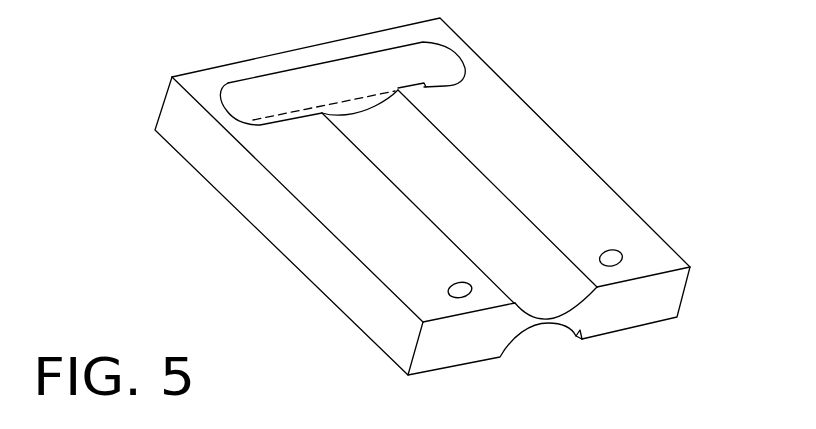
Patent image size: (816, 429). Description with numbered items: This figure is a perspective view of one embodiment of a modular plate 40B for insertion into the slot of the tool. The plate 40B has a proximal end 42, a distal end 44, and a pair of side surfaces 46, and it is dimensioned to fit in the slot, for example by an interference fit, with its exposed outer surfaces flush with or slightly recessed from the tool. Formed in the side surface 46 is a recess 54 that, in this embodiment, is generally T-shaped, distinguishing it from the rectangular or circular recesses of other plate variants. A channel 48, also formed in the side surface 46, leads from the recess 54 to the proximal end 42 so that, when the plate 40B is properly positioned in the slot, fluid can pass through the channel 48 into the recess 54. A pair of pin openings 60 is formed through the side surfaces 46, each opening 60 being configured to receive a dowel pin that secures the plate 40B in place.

The plate 40B is at (578, 38).
The distal end 44 is at (250, 58).
The recess 54 is at (363, 91).
The channel 48 is at (547, 292).
The side surface 46 is at (417, 290).
The pin opening 60 is at (464, 295).
The proximal end 42 is at (472, 343).